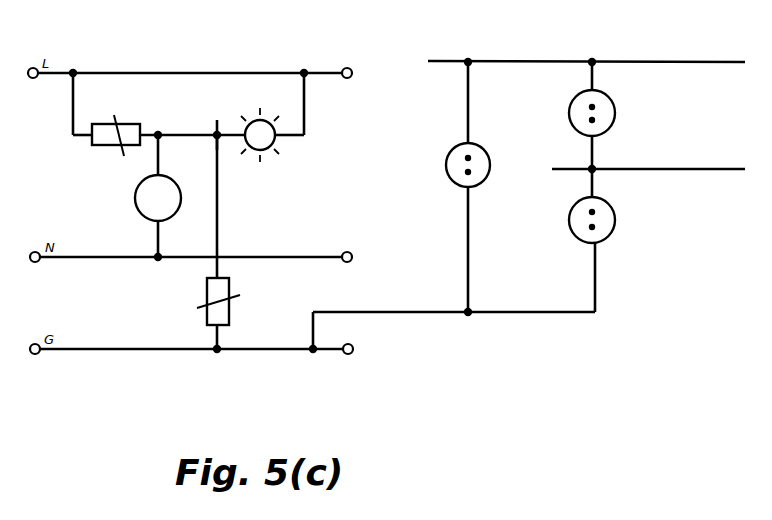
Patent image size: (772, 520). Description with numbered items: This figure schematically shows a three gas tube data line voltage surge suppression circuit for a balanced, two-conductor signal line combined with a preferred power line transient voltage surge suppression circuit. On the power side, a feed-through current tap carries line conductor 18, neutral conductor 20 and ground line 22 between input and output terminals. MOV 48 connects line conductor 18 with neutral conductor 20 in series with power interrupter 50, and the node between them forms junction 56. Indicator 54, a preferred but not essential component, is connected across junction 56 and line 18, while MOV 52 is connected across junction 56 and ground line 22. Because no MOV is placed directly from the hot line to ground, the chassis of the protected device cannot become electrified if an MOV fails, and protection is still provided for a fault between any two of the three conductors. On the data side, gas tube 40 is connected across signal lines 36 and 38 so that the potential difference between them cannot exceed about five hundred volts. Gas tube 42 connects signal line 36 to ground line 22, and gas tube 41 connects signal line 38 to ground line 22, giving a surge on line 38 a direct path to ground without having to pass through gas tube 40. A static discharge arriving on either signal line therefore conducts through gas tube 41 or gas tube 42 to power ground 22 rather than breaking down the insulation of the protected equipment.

The line conductor 18 is at (235, 73).
The neutral conductor 20 is at (311, 257).
The ground line 22 is at (250, 352).
The signal line 36 is at (644, 61).
The signal line 38 is at (669, 169).
The gas tube 40 is at (571, 105).
The gas tube 41 is at (575, 233).
The gas tube 42 is at (445, 157).
The MOV 48 is at (90, 145).
The power interrupter 50 is at (135, 205).
The MOV 52 is at (206, 285).
The indicator 54 is at (266, 152).
The junction 56 is at (215, 131).